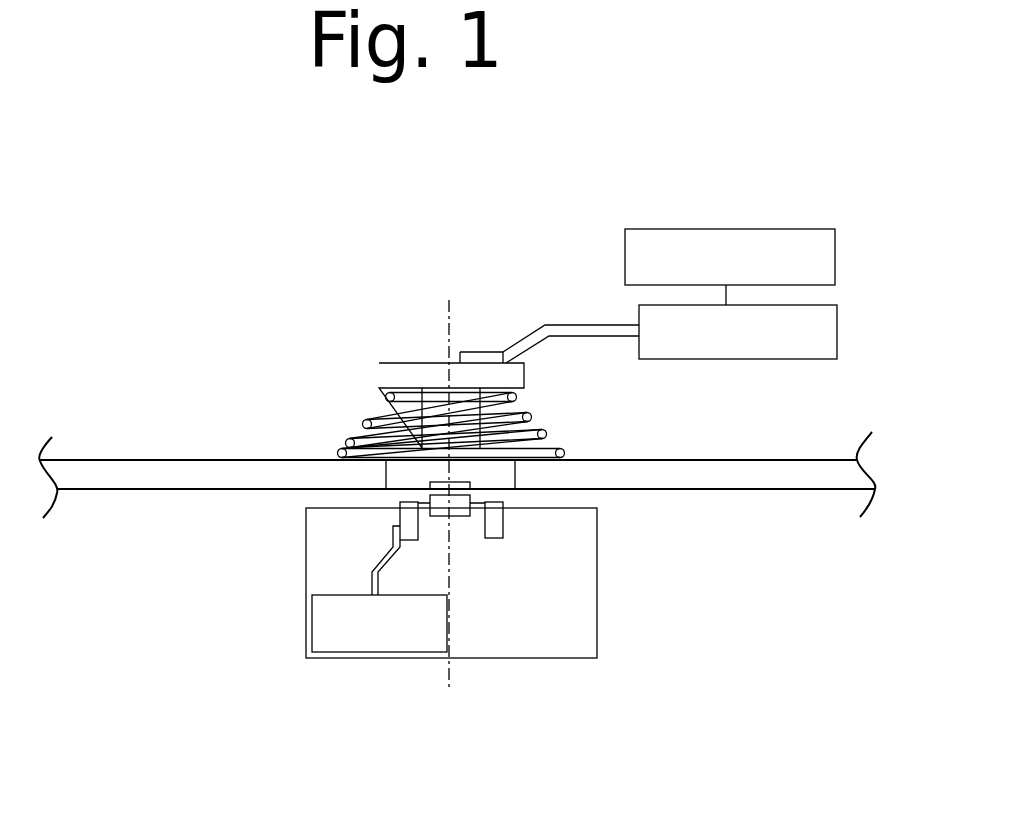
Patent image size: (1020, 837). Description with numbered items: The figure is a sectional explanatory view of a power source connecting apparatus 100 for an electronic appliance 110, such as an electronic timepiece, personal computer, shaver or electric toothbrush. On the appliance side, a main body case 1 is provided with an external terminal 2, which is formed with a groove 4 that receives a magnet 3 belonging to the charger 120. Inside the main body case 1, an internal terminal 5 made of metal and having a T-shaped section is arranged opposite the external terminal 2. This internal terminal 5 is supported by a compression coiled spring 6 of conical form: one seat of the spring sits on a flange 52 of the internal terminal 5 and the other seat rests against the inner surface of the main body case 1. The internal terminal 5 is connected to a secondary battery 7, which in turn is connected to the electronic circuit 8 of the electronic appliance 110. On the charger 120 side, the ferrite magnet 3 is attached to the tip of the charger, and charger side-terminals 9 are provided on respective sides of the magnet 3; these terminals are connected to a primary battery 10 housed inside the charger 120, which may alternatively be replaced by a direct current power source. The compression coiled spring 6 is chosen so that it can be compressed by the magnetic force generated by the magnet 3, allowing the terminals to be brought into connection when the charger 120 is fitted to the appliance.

The main body case 1 is at (790, 489).
The external terminal 2 is at (380, 502).
The magnet 3 is at (450, 516).
The groove 4 is at (428, 484).
The internal terminal 5 is at (379, 378).
The compression coiled spring 6 is at (546, 431).
The secondary battery 7 is at (851, 361).
The electronic circuit 8 is at (833, 229).
The charger side-terminals 9 is at (398, 517).
The primary battery 10 is at (343, 658).
The flange 52 is at (403, 388).
The power source connecting apparatus 100 is at (231, 260).
The electronic appliance 110 is at (617, 325).
The charger 120 is at (812, 604).